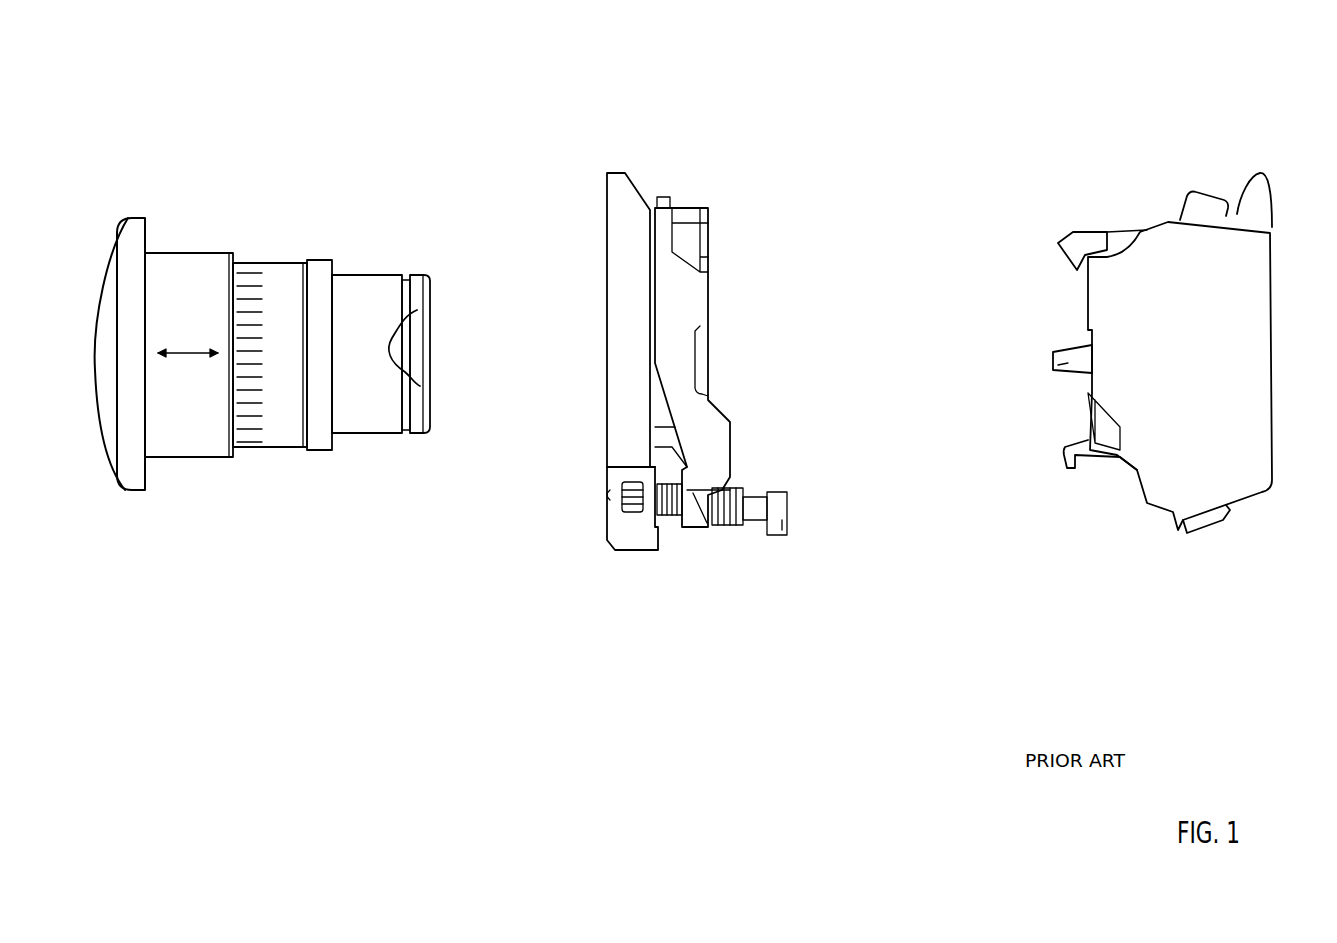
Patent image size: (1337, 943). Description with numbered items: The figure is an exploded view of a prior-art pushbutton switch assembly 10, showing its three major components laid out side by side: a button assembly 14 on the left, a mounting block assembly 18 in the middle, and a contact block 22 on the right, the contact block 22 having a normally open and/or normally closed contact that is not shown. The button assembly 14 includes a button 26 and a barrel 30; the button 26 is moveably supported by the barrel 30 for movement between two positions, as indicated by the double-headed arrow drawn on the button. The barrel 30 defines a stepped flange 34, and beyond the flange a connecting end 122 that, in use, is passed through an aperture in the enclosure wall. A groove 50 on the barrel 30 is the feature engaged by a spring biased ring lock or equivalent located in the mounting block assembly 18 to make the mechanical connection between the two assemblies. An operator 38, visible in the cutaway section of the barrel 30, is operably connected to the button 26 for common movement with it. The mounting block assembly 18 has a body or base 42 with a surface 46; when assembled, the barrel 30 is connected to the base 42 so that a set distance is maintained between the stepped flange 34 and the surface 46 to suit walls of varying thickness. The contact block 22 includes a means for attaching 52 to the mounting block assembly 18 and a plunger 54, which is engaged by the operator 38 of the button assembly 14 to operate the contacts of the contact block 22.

The pushbutton switch assembly 10 is at (1285, 93).
The button assembly 14 is at (266, 166).
The mounting block assembly 18 is at (668, 161).
The contact block 22 is at (1208, 352).
The button 26 is at (167, 277).
The barrel 30 is at (282, 303).
The stepped flange 34 is at (340, 448).
The operator 38 is at (411, 353).
The base 42 is at (683, 310).
The surface 46 is at (607, 445).
The groove 50 is at (402, 273).
The means for attaching 52 is at (1058, 243).
The plunger 54 is at (1053, 365).
The connecting end 122 is at (378, 424).